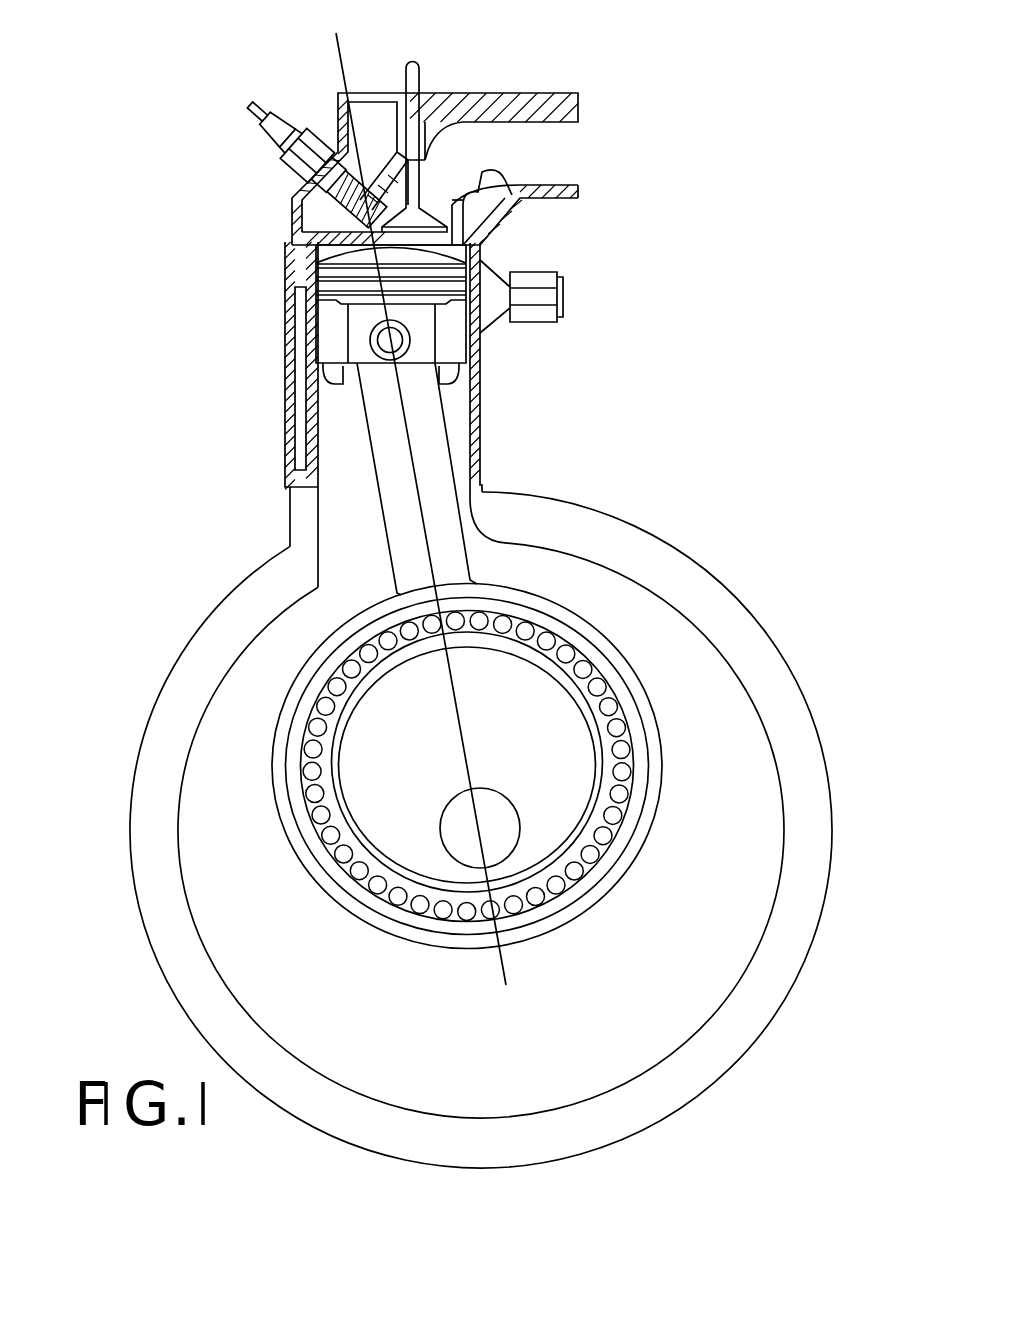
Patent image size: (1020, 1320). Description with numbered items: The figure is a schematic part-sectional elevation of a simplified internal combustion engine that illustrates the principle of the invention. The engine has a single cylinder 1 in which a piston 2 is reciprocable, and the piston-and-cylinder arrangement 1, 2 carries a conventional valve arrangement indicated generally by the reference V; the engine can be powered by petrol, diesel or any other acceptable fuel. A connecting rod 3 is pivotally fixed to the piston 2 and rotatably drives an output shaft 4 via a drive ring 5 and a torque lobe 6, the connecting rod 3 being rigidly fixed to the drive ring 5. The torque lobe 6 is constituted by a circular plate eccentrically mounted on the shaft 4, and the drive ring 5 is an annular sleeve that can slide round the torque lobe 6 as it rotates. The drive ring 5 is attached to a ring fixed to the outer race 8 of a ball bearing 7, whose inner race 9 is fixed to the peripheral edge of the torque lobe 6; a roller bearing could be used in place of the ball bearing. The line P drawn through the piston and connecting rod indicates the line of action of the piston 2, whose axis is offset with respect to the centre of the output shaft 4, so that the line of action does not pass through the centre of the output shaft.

The valve arrangement V is at (293, 178).
The cylinder 1 is at (297, 270).
The piston 2 is at (333, 332).
The connecting rod 3 is at (443, 465).
The piston stroke axis P is at (410, 423).
The output shaft 4 is at (510, 848).
The drive ring 5 is at (316, 646).
The torque lobe 6 is at (500, 712).
The ball bearing 7 is at (305, 755).
The outer race 8 is at (303, 693).
The inner race 9 is at (322, 826).